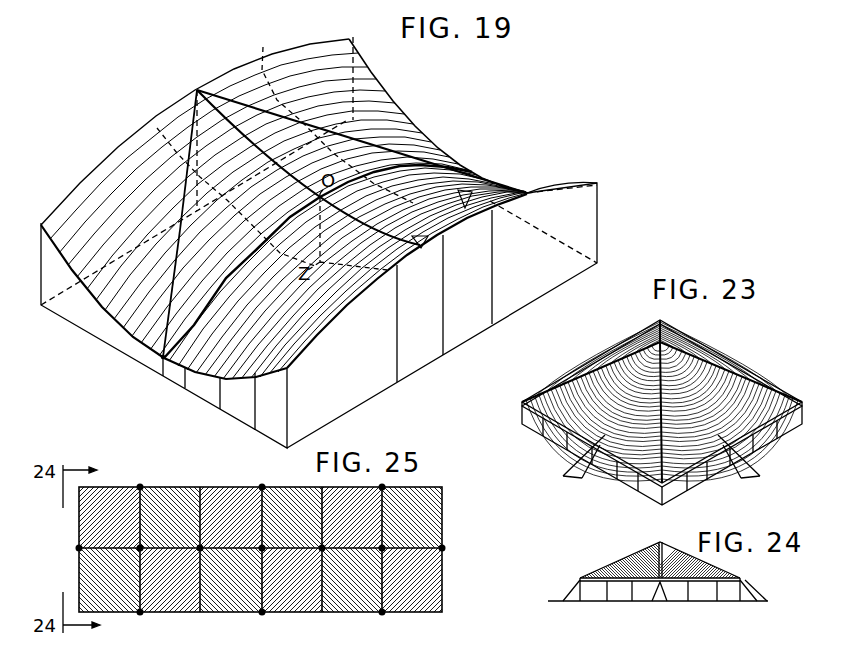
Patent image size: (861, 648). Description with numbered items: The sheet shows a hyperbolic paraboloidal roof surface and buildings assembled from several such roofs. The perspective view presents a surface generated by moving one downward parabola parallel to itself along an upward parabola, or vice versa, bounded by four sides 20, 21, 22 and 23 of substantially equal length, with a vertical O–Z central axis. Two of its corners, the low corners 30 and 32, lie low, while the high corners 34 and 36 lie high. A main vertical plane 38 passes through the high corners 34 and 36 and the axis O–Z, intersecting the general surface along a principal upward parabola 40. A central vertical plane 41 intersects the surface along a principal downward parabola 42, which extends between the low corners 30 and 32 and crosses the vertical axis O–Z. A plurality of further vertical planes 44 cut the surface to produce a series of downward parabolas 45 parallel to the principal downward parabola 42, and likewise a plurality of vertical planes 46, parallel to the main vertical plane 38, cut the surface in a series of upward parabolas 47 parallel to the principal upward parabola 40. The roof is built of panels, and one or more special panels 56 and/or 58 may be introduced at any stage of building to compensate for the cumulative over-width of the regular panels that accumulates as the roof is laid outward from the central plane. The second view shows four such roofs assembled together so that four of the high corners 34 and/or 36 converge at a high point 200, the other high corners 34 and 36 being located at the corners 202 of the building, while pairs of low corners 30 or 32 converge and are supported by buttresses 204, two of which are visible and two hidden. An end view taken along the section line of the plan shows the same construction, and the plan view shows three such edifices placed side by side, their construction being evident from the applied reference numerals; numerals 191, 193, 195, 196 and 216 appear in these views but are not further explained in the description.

In FIG. 19, the side 20 is at (243, 375).
In FIG. 19, the side 21 is at (457, 192).
In FIG. 19, the side 22 is at (285, 118).
In FIG. 19, the side 23 is at (171, 283).
In FIG. 19, the low corner 30 is at (495, 164).
In FIG. 19, the low corner 32 is at (150, 360).
In FIG. 19, the high corner 34 is at (205, 82).
In FIG. 19, the high corner 36 is at (468, 241).
In FIG. 19, the main vertical plane 38 is at (445, 284).
In FIG. 19, the principal upward parabola 40 is at (316, 183).
In FIG. 19, the central vertical plane 41 is at (162, 362).
In FIG. 19, the principal downward parabola 42 is at (230, 274).
In FIG. 19, the vertical planes 44 is at (218, 396).
In FIG. 19, the downward parabolas 45 is at (233, 289).
In FIG. 19, the vertical planes 46 is at (493, 296).
In FIG. 19, the upward parabolas 47 is at (157, 130).
In FIG. 19, the special panel 56 is at (437, 119).
In FIG. 19, the special panel 58 is at (368, 70).
In FIG. 23, the roof panel 191 is at (685, 455).
In FIG. 25, the roof panel 191 is at (90, 583).
In FIG. 23, the wall 193 is at (527, 423).
In FIG. 23, the wall post 195 is at (555, 427).
In FIG. 23, the wall post 196 is at (598, 467).
In FIG. 23, the high point 200 is at (672, 340).
In FIG. 24, the high point 200 is at (657, 543).
In FIG. 25, the high point 200 is at (140, 548).
In FIG. 23, the corners of the building 202 is at (655, 320).
In FIG. 24, the corners of the building 202 is at (580, 577).
In FIG. 25, the corners of the building 202 is at (200, 487).
In FIG. 23, the buttresses 204 is at (570, 470).
In FIG. 24, the buttresses 204 is at (572, 590).
In FIG. 25, the buttresses 204 is at (140, 484).
In FIG. 24, the wall member 216 is at (595, 584).
In FIG. 25, the wall member 216 is at (80, 568).